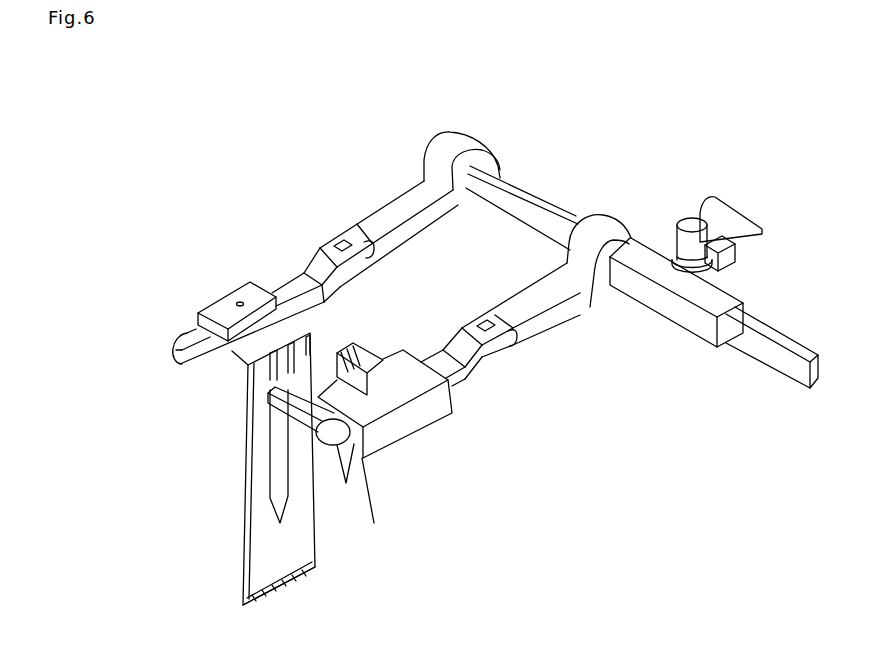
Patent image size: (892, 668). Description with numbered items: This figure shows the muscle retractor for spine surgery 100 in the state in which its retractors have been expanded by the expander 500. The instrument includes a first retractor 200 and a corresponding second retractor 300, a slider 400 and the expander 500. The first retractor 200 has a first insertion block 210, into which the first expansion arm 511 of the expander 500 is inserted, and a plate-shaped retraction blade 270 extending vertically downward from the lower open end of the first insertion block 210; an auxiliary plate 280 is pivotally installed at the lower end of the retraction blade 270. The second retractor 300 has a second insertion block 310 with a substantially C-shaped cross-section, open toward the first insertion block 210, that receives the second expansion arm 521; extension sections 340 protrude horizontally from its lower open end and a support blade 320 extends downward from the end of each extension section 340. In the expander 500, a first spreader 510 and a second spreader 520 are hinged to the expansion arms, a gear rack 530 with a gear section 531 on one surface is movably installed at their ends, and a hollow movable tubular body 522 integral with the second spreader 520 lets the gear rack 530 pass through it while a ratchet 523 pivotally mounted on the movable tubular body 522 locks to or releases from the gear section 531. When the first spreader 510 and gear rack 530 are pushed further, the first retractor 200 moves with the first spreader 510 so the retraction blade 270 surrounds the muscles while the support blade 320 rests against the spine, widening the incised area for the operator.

The muscle retractor for spine surgery 100 is at (300, 152).
The first retractor 200 is at (221, 294).
The first insertion block 210 is at (197, 317).
The retraction blade 270 is at (245, 533).
The auxiliary plate 280 is at (245, 598).
The second retractor 300 is at (414, 445).
The second insertion block 310 is at (430, 416).
The support blade 320 is at (268, 500).
The extension section 340 is at (277, 427).
The slider 400 is at (374, 344).
The expander 500 is at (651, 203).
The first spreader 510 is at (398, 198).
The first expansion arm 511 is at (300, 266).
The second spreader 520 is at (540, 327).
The second expansion arm 521 is at (458, 368).
The movable tubular body 522 is at (700, 330).
The ratchet 523 is at (737, 264).
The gear rack 530 is at (768, 362).
The gear section 531 is at (792, 343).